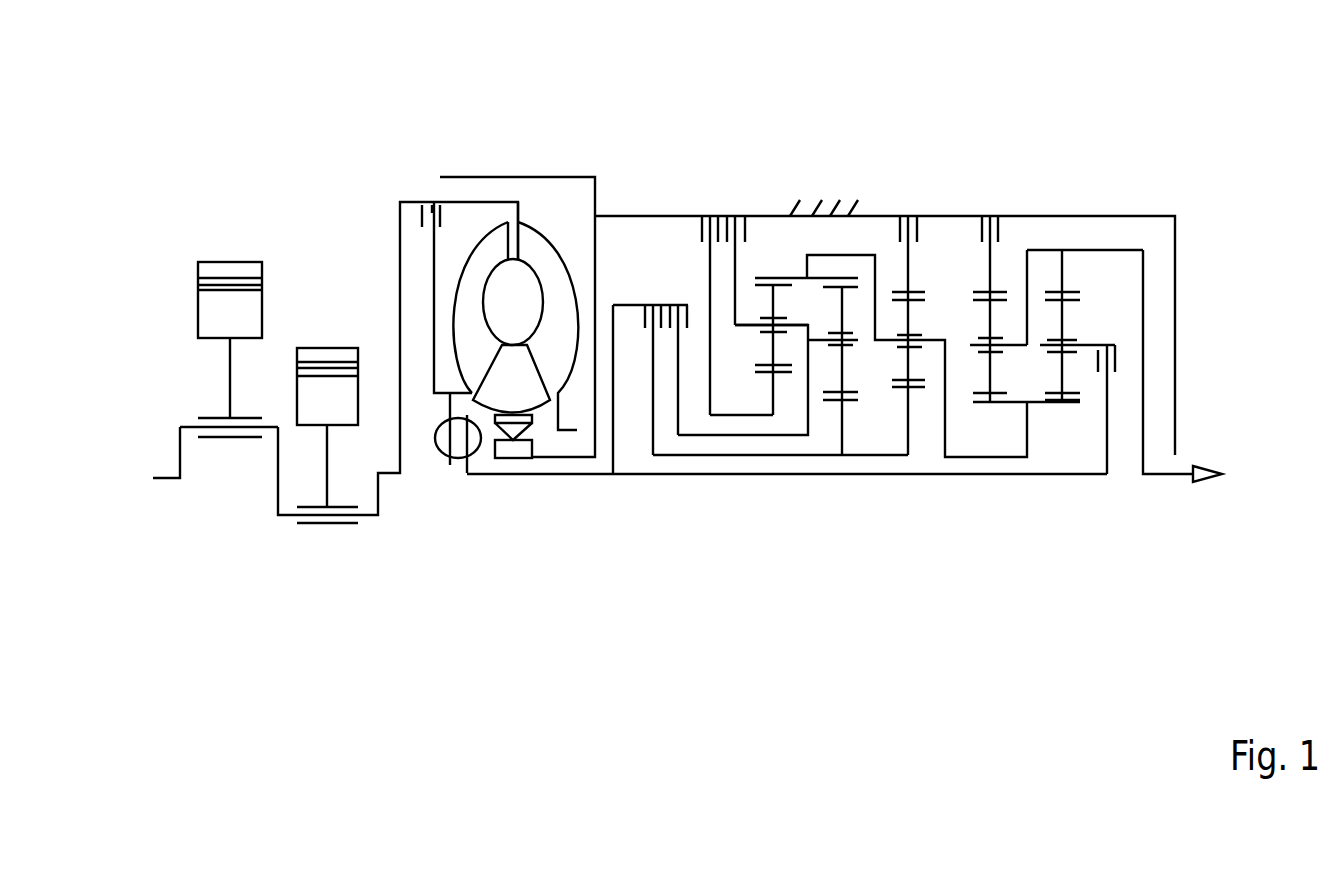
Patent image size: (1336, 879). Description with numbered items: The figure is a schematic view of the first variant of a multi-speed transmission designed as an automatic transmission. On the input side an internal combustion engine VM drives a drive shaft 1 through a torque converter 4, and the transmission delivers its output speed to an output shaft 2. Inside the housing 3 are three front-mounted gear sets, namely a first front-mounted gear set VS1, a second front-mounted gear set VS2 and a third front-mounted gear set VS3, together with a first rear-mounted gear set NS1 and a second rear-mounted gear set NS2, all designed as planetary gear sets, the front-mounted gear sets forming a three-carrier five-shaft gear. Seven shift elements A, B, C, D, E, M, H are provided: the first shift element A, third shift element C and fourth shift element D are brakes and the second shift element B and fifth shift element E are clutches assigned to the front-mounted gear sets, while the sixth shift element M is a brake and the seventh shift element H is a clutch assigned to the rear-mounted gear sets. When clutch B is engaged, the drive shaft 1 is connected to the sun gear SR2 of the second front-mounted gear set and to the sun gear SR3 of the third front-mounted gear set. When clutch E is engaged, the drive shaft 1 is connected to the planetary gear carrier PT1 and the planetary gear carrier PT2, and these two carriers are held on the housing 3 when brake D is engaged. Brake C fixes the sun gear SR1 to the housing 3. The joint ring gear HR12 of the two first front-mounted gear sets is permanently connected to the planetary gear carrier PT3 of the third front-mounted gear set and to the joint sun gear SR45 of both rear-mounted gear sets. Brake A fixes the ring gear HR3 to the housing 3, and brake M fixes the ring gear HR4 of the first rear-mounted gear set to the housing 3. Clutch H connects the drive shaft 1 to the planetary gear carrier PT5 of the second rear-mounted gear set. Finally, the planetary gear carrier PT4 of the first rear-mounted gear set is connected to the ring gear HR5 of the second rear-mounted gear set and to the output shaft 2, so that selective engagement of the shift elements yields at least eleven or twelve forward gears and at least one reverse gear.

The internal combustion engine VM is at (313, 250).
The torque converter 4 is at (548, 212).
The housing 3 is at (795, 214).
The drive shaft 1 is at (587, 477).
The output shaft 2 is at (1150, 427).
The first shift element A is at (909, 242).
The second shift element B is at (653, 363).
The third shift element C is at (710, 298).
The fourth shift element D is at (736, 253).
The fifth shift element E is at (678, 353).
The sixth shift element M is at (991, 242).
The seventh shift element H is at (1106, 391).
The first front-mounted gear set VS1 is at (773, 483).
The second front-mounted gear set VS2 is at (840, 483).
The third front-mounted gear set VS3 is at (908, 483).
The first rear-mounted gear set NS1 is at (990, 483).
The second rear-mounted gear set NS2 is at (1062, 483).
The joint ring gear HR12 is at (787, 278).
The ring gear HR3 is at (920, 290).
The ring gear HR4 is at (997, 290).
The ring gear HR5 is at (1073, 287).
The planetary gear carrier PT1 is at (758, 332).
The planetary gear carrier PT2 is at (851, 357).
The planetary gear carrier PT3 is at (930, 327).
The planetary gear carrier PT4 is at (1013, 353).
The planetary gear carrier PT5 is at (1072, 328).
The sun gear SR1 is at (762, 378).
The sun gear SR2 is at (823, 403).
The sun gear SR3 is at (918, 392).
The joint sun gear SR45 is at (1040, 403).